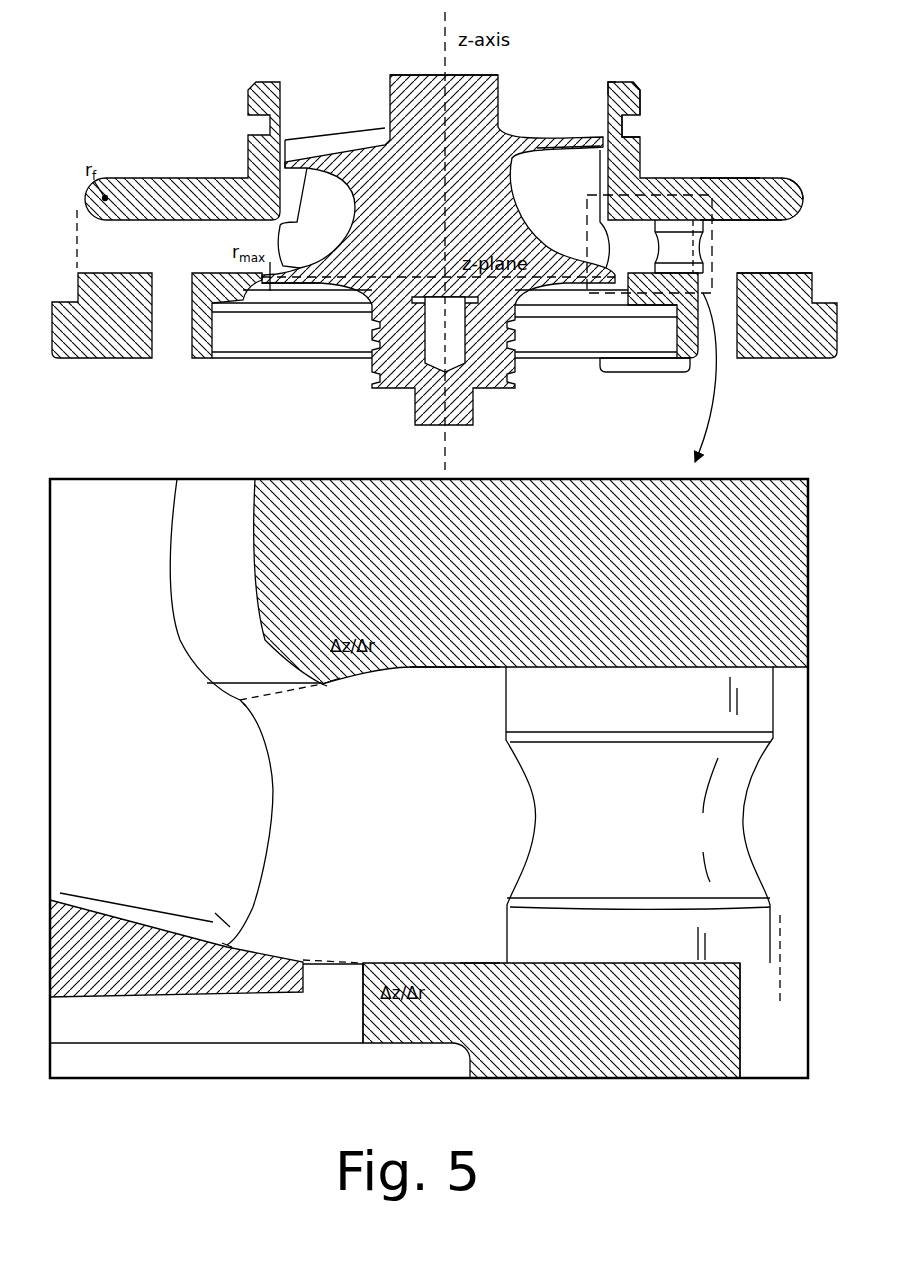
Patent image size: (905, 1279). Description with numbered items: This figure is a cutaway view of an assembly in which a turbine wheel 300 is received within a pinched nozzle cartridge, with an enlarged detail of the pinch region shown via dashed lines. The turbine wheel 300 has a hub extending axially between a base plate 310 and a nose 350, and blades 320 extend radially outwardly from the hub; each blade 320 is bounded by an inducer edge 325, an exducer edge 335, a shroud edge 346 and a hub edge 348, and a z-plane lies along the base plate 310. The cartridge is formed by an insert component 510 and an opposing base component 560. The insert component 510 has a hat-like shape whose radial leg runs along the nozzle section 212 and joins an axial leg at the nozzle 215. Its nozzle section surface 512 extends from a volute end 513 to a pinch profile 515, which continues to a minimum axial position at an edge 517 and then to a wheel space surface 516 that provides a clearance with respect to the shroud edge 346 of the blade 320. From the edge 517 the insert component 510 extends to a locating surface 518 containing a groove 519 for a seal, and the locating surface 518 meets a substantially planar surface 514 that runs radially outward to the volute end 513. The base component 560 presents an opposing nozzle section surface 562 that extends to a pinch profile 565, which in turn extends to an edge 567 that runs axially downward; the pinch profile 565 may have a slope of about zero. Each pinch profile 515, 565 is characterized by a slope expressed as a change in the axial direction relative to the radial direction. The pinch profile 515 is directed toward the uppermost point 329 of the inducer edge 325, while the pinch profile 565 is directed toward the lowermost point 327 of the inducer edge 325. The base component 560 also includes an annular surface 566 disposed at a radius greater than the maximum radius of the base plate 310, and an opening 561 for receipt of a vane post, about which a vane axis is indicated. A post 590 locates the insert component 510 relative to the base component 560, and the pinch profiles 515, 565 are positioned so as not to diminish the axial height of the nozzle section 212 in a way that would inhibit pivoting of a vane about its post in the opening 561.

The nozzle section 212 is at (672, 244).
The nozzle 215 is at (390, 766).
The turbine wheel 300 is at (438, 250).
The base plate 310 is at (317, 282).
The blade 320 is at (347, 348).
The inducer edge 325 is at (283, 252).
The lowermost point 327 is at (227, 947).
The uppermost point 329 is at (243, 703).
The exducer edge 335 is at (352, 128).
The shroud edge 346 is at (180, 643).
The hub edge 348 is at (63, 904).
The nose 350 is at (398, 76).
The insert component 510 is at (446, 383).
The nozzle section surface 512 is at (777, 221).
The volute end 513 is at (803, 183).
The substantially planar surface 514 is at (735, 178).
The pinch profile 515 is at (338, 706).
The wheel space surface 516 is at (610, 128).
The edge 517 is at (614, 84).
The locating surface 518 is at (641, 96).
The groove 519 is at (640, 134).
The base component 560 is at (443, 675).
The opening 561 is at (767, 1020).
The nozzle section surface 562 is at (795, 273).
The pinch profile 565 is at (375, 955).
The annular surface 566 is at (321, 1003).
The edge 567 is at (362, 963).
The post 590 is at (652, 612).